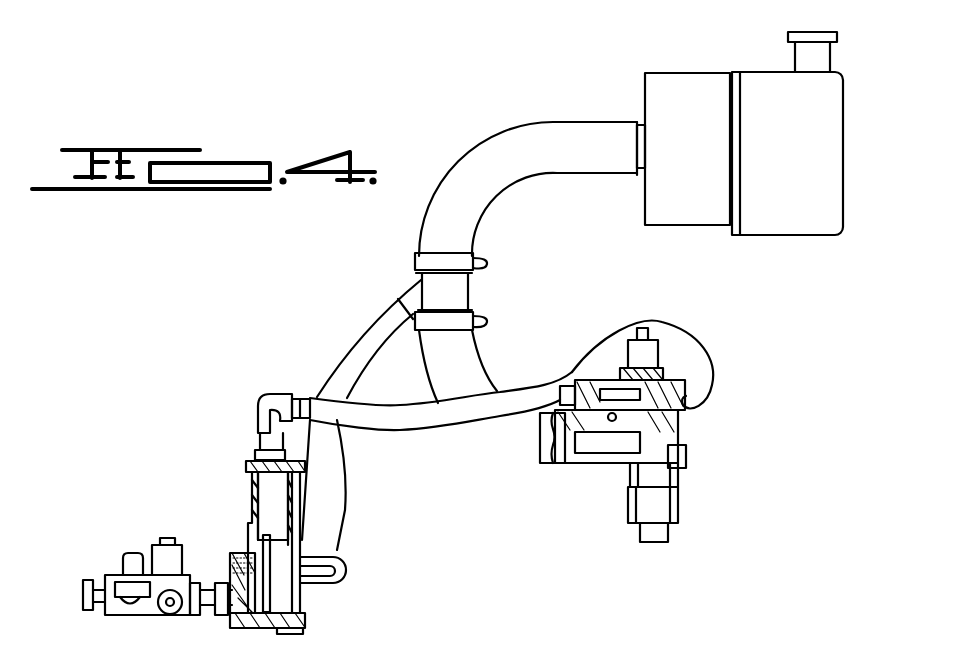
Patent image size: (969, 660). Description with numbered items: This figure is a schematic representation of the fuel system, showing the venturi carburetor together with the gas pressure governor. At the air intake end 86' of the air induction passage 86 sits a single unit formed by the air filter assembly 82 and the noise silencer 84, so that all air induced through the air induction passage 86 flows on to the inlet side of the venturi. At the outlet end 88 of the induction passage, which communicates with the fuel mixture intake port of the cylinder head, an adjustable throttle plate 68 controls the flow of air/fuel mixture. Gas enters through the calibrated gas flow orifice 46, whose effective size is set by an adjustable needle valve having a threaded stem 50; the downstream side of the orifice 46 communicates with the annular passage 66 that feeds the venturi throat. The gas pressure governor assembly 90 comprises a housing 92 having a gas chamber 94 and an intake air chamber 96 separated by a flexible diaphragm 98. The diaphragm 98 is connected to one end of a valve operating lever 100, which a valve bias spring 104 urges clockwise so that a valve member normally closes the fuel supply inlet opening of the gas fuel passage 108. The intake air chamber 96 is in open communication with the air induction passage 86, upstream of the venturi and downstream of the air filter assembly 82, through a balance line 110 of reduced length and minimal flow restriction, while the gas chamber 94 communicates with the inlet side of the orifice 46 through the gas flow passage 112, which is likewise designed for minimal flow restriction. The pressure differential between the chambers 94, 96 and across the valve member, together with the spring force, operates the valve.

The calibrated gas flow orifice 46 is at (690, 373).
The threaded stem 50 is at (590, 378).
The annular passage 66 is at (598, 467).
The adjustable throttle plate 68 is at (680, 438).
The air filter assembly 82 is at (805, 172).
The noise silencer 84 is at (687, 90).
The air induction passage 86 is at (532, 171).
The air intake end 86' is at (837, 42).
The outlet end of the induction passage 88 is at (672, 450).
The gas pressure governor assembly 90 is at (305, 471).
The housing 92 is at (307, 591).
The gas chamber 94 is at (265, 498).
The intake air chamber 96 is at (297, 507).
The flexible diaphragm 98 is at (293, 532).
The valve operating lever 100 is at (263, 557).
The valve bias spring 104 is at (237, 563).
The gas fuel passage 108 is at (208, 595).
The balance line 110 is at (382, 322).
The gas flow passage 112 is at (433, 418).